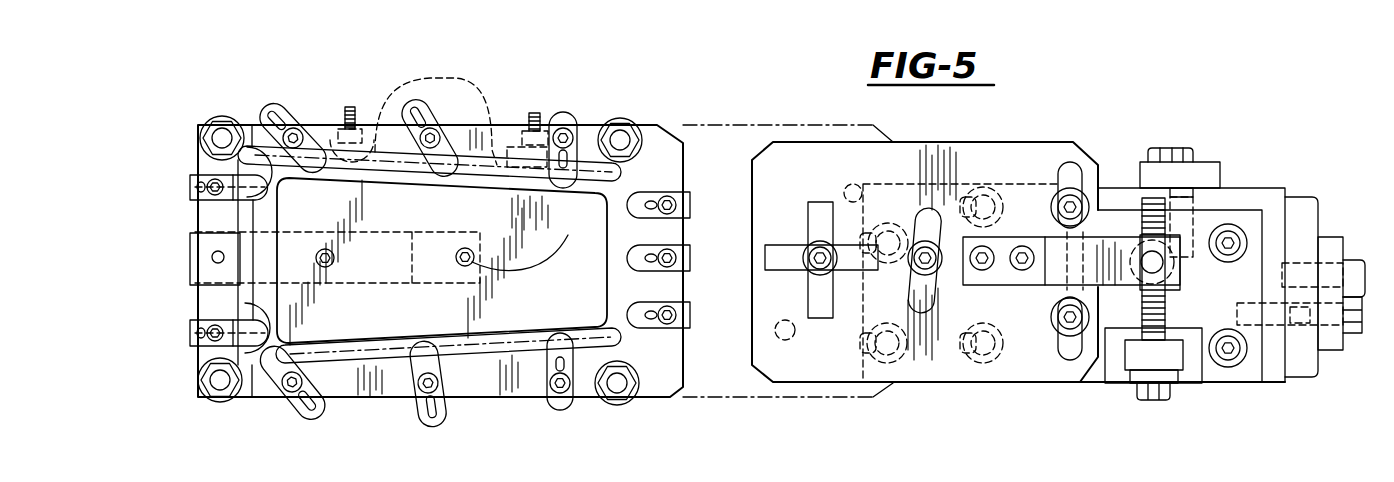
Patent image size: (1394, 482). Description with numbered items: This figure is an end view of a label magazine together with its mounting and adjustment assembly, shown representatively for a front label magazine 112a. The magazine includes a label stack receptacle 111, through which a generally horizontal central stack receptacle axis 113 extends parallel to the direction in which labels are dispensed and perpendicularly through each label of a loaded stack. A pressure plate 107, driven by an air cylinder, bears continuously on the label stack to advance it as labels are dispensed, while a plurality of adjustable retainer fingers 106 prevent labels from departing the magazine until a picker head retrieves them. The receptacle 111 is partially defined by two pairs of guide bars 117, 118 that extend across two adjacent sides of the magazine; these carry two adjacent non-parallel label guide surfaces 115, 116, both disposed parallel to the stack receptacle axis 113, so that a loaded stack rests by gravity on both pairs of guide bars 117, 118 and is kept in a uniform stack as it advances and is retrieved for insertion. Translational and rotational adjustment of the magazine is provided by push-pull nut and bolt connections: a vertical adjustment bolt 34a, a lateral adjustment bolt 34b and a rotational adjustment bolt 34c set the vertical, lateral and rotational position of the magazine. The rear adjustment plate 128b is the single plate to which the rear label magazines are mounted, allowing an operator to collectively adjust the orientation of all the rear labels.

The adjustable retainer fingers 106 is at (268, 150).
The guide bars 117 is at (354, 136).
The label guide surface 115 is at (436, 116).
The central stack receptacle axis 113 is at (548, 332).
The front label magazine 112a is at (672, 138).
The guide bars 118 is at (237, 212).
The label guide surface 116 is at (253, 240).
The pressure plate 107 is at (406, 319).
The label stack receptacle 111 is at (548, 332).
The lateral adjustment bolt 34b is at (1190, 148).
The rear adjustment plate 128b is at (1310, 222).
The rotational adjustment bolt 34c is at (1172, 393).
The vertical adjustment bolt 34a is at (1367, 347).